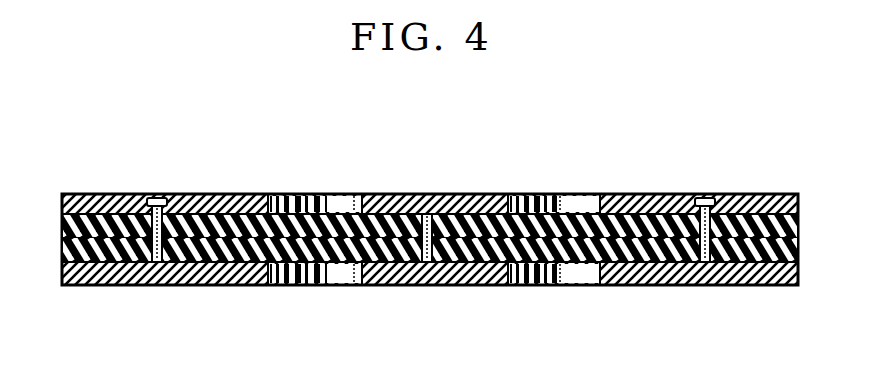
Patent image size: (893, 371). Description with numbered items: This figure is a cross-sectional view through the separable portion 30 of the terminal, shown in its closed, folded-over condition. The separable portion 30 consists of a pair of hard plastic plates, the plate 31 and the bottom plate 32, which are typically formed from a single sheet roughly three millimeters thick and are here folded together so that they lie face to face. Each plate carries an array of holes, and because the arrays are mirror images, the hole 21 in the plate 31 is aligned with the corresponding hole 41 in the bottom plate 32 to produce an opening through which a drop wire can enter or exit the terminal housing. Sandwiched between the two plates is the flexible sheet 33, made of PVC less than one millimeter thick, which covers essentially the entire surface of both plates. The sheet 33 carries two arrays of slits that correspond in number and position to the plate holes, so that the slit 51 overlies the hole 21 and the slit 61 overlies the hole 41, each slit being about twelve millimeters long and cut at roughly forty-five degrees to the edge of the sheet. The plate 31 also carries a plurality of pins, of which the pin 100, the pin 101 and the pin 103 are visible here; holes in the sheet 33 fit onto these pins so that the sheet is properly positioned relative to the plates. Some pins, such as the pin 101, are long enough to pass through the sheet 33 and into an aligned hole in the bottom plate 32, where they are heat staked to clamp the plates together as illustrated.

The separable portion 30 is at (594, 149).
The plate 31 is at (88, 194).
The bottom plate 32 is at (126, 287).
The flexible sheet 33 is at (66, 245).
The hole 21 is at (312, 200).
The hole 41 is at (275, 287).
The slit 51 is at (326, 210).
The slit 61 is at (320, 287).
The pin 100 is at (710, 194).
The pin 101 is at (158, 194).
The pin 103 is at (434, 194).